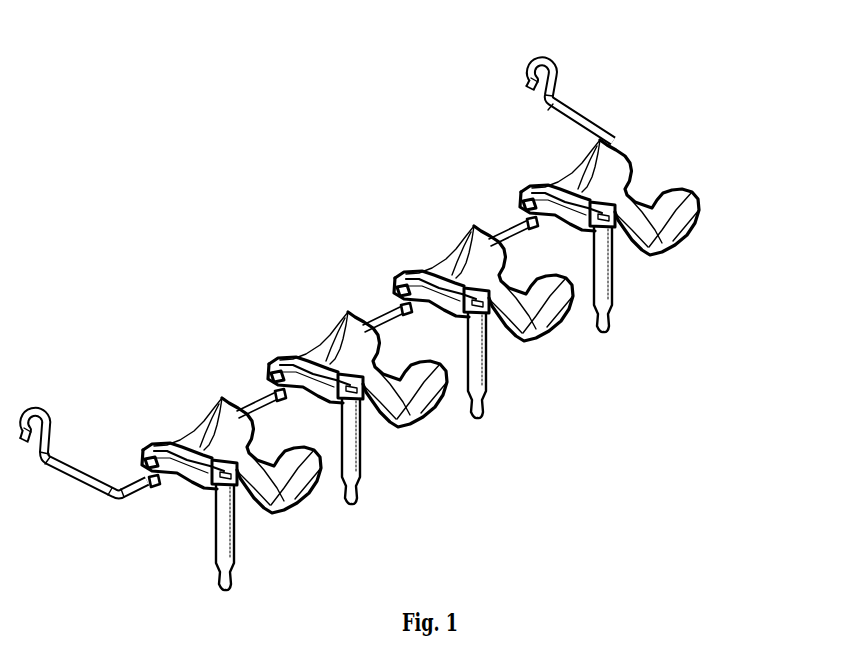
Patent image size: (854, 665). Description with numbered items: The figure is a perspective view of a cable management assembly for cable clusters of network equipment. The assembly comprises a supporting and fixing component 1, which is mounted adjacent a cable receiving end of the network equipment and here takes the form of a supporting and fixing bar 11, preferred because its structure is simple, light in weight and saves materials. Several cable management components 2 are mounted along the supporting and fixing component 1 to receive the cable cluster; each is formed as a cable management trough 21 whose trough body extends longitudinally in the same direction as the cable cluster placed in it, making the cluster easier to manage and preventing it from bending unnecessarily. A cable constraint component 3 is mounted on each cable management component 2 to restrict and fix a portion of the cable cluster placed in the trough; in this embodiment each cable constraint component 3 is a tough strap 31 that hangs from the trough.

The supporting and fixing component 1 is at (588, 92).
The supporting and fixing bar 11 is at (577, 118).
The cable management component 2 is at (678, 172).
The cable management trough 21 is at (674, 213).
The cable constraint component 3 is at (630, 325).
The tough strap 31 is at (603, 281).